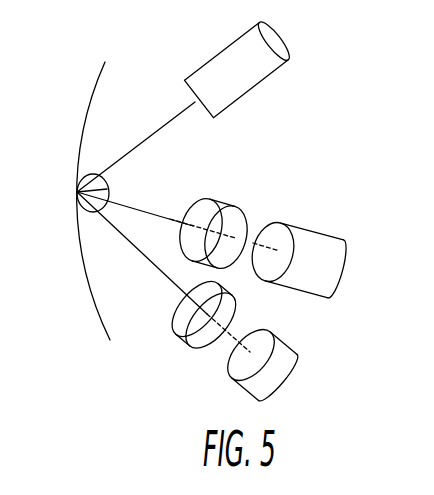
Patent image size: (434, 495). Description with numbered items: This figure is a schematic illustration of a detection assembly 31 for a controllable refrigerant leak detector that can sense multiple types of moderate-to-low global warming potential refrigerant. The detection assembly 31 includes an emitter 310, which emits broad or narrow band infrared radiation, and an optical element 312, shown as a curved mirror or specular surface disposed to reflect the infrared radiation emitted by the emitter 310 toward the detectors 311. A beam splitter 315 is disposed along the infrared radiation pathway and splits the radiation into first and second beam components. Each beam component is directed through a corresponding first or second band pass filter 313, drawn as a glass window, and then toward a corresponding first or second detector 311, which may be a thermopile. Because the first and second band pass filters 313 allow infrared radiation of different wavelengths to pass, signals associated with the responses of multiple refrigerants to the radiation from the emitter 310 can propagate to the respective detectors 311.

The detection assembly 31 is at (160, 113).
The emitter 310 is at (280, 33).
The detector 311 is at (333, 292).
The optical element 312 is at (90, 101).
The band pass filter 313 is at (233, 208).
The beam splitter 315 is at (108, 192).